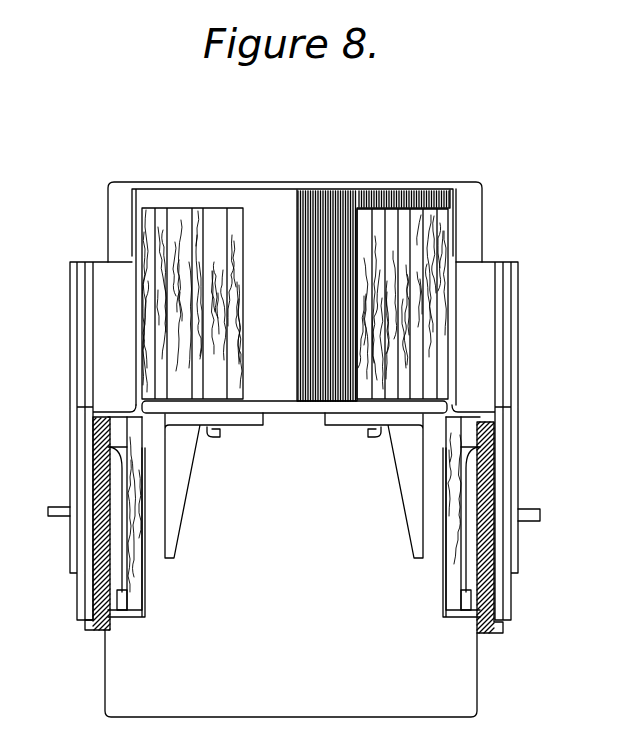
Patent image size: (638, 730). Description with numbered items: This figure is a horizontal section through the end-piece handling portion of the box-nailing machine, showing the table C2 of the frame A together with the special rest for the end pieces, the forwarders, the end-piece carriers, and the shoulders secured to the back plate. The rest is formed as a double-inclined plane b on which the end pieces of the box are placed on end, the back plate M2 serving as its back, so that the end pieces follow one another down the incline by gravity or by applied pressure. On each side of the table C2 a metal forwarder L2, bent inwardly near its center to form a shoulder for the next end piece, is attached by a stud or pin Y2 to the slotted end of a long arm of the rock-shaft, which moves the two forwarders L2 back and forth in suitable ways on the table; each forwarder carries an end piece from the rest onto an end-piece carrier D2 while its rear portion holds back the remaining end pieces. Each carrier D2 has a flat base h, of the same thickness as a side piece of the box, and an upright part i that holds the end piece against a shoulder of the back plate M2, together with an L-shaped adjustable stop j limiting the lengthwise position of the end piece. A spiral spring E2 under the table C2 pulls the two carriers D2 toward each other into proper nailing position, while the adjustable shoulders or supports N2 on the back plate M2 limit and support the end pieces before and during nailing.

The table C2 is at (361, 182).
The forwarder L2 is at (545, 437).
The stud or pin Y2 is at (562, 516).
The double-inclined plane b is at (295, 303).
The spiral spring E2 is at (370, 295).
The back plate M2 is at (294, 404).
The shoulders or supports N2 is at (292, 485).
The frame A is at (289, 535).
The end-piece carrier D2 is at (135, 619).
The base h is at (150, 582).
The upright part i is at (122, 572).
The adjustable stop j is at (120, 620).